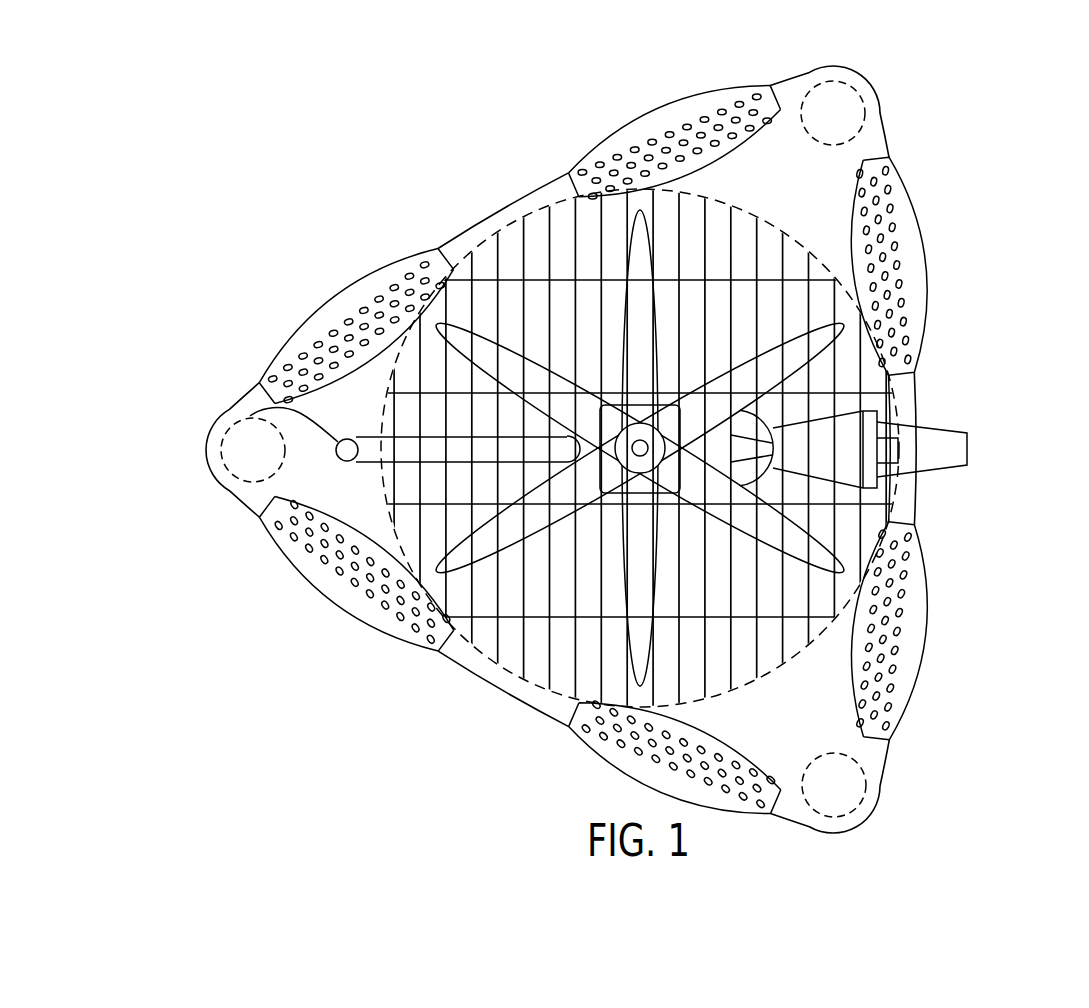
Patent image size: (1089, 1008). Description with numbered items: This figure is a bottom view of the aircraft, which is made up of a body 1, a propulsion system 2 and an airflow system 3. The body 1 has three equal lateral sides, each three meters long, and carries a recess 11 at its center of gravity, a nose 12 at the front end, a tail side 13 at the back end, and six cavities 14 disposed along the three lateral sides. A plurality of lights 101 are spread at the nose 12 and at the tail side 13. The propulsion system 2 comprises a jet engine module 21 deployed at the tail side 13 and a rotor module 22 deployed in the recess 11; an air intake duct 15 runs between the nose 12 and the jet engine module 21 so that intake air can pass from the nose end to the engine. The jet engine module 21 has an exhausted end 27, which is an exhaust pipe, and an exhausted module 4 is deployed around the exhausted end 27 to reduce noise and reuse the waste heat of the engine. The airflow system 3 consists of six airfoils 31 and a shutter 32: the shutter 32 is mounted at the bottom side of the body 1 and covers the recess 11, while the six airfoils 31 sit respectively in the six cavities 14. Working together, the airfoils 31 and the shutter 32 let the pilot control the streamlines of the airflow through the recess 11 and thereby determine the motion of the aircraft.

The body 1 is at (262, 675).
The lights 101 is at (232, 452).
The recess 11 is at (513, 260).
The nose 12 is at (262, 382).
The tail side 13 is at (905, 503).
The cavities 14 is at (262, 515).
The air intake duct 15 is at (217, 421).
The propulsion system 2 is at (957, 337).
The jet engine module 21 is at (893, 398).
The rotor module 22 is at (863, 320).
The exhausted end 27 is at (942, 431).
The airflow system 3 is at (640, 513).
The airfoils 31 is at (593, 743).
The shutter 32 is at (547, 603).
The exhausted module 4 is at (950, 462).